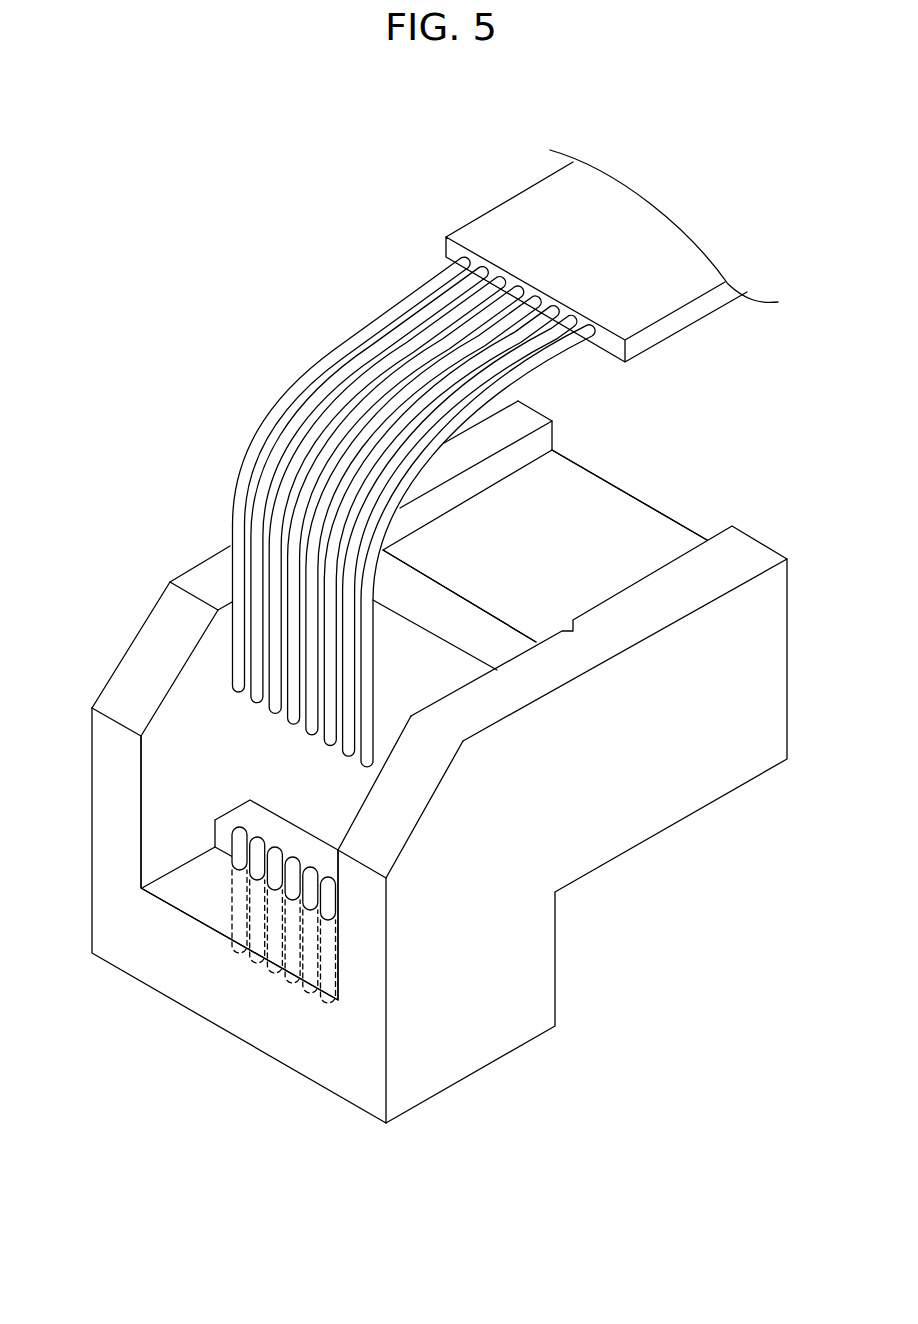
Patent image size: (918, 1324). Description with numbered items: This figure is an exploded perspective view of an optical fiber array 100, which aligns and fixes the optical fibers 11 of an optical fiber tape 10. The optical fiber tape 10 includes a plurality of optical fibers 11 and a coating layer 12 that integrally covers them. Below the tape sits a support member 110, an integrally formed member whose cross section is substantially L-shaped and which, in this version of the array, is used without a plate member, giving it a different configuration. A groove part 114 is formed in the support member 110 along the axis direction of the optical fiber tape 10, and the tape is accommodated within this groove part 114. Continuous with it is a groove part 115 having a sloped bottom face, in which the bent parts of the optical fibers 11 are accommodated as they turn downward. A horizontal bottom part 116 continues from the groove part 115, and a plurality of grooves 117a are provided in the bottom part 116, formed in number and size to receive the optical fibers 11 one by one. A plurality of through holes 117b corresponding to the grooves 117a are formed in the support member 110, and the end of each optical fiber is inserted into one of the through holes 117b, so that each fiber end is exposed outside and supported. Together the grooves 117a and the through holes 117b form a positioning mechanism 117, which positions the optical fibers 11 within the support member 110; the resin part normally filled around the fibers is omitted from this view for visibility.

The optical fiber tape 10 is at (375, 115).
The optical fibers 11 is at (408, 292).
The coating layer 12 is at (477, 237).
The optical fiber array 100 is at (138, 581).
The support member 110 is at (295, 1025).
The groove part 114 is at (613, 527).
The groove part 115 is at (433, 677).
The bottom part 116 is at (203, 867).
The positioning mechanism 117 is at (117, 1068).
The grooves 117a is at (273, 872).
The through holes 117b is at (275, 945).